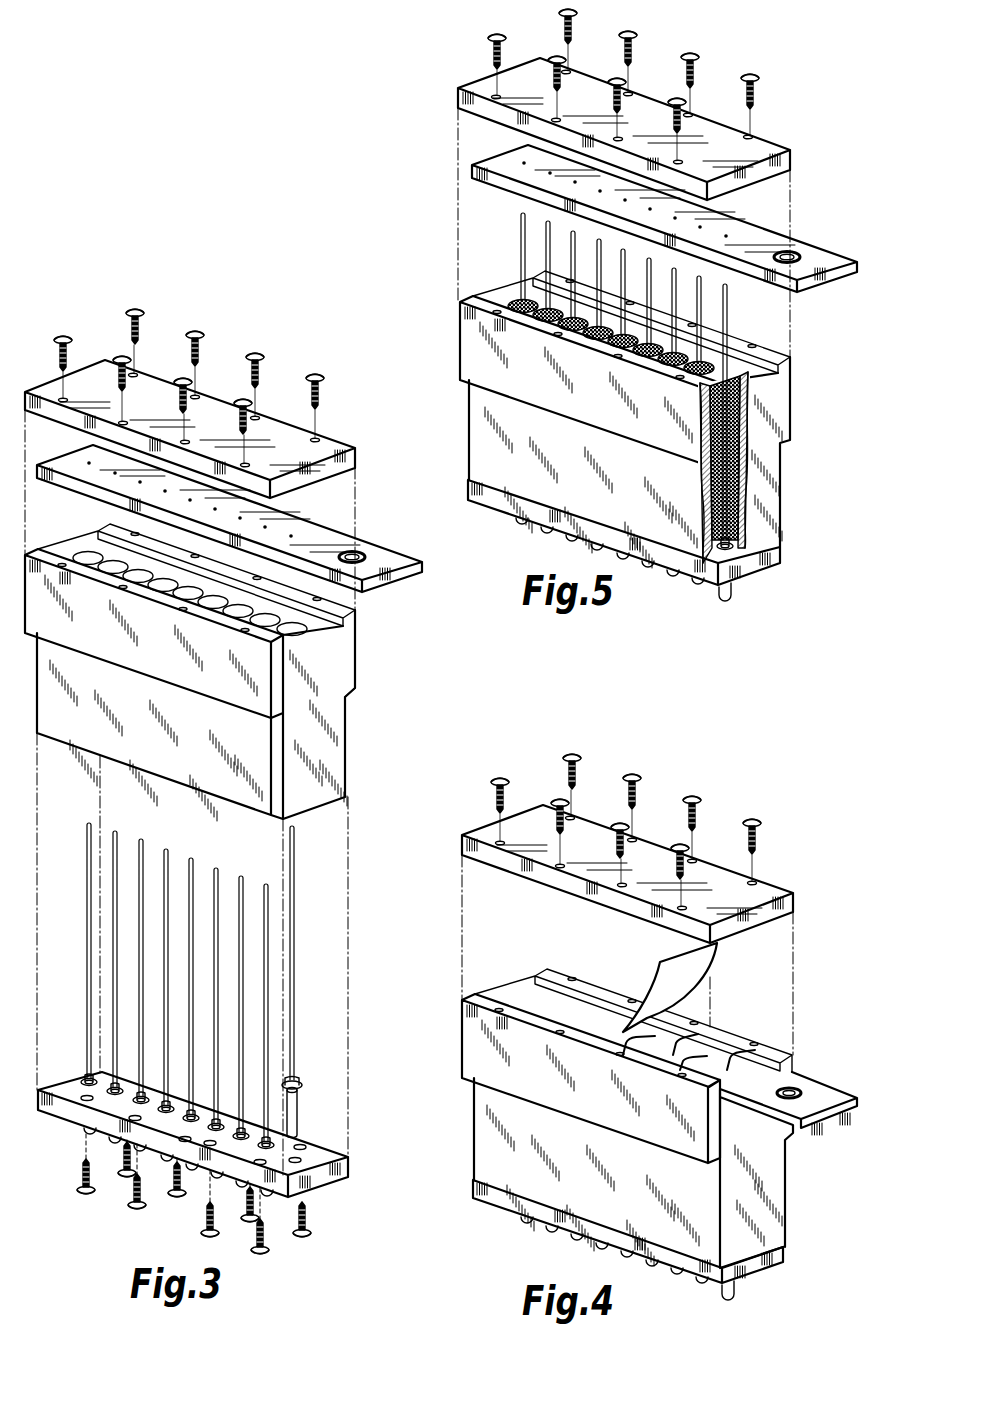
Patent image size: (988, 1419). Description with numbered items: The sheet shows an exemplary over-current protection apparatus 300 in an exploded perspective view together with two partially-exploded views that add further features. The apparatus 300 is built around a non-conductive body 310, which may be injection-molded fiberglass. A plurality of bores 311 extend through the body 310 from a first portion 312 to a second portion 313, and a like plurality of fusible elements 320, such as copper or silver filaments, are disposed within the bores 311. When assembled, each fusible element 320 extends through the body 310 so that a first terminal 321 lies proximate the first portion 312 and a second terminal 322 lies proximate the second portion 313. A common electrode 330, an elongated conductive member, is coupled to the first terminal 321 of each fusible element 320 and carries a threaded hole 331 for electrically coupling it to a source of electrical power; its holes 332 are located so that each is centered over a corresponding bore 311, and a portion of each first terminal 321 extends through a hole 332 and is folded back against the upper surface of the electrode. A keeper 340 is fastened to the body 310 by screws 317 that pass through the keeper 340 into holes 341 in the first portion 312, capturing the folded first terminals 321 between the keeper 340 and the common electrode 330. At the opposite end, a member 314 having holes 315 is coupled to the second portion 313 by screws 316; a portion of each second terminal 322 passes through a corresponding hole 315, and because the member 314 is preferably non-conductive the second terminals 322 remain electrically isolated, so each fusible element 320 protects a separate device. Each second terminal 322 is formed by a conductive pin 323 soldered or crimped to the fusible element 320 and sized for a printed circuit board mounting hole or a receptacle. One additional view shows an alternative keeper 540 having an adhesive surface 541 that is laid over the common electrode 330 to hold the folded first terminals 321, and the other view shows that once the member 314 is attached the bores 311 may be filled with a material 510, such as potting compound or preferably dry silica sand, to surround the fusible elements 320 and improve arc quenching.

In FIG. 3, the over-current protection apparatus 300 is at (265, 335).
In FIG. 3, the non-conductive body 310 is at (241, 691).
In FIG. 5, the non-conductive body 310 is at (661, 419).
In FIG. 4, the non-conductive body 310 is at (665, 1118).
In FIG. 3, the bores 311 is at (344, 633).
In FIG. 3, the first portion 312 is at (101, 552).
In FIG. 3, the second portion 313 is at (321, 816).
In FIG. 3, the member 314 is at (242, 1151).
In FIG. 5, the member 314 is at (784, 557).
In FIG. 4, the member 314 is at (786, 1257).
In FIG. 3, the holes 315 is at (313, 1157).
In FIG. 3, the screws 316 is at (268, 1249).
In FIG. 3, the screws 317 is at (315, 376).
In FIG. 5, the screws 317 is at (752, 76).
In FIG. 4, the screws 317 is at (752, 826).
In FIG. 3, the fusible elements 320 is at (248, 980).
In FIG. 5, the fusible elements 320 is at (729, 491).
In FIG. 3, the first terminal 321 is at (283, 852).
In FIG. 4, the first terminal 321 is at (727, 1065).
In FIG. 3, the second terminal 322 is at (313, 1093).
In FIG. 3, the conductive pin 323 is at (358, 982).
In FIG. 5, the conductive pin 323 is at (725, 600).
In FIG. 4, the conductive pin 323 is at (723, 1293).
In FIG. 3, the common electrode 330 is at (262, 518).
In FIG. 5, the common electrode 330 is at (820, 258).
In FIG. 4, the common electrode 330 is at (749, 1055).
In FIG. 3, the threaded hole 331 is at (354, 555).
In FIG. 3, the holes 332 is at (291, 532).
In FIG. 3, the keeper 340 is at (338, 442).
In FIG. 5, the keeper 340 is at (766, 138).
In FIG. 4, the keeper 340 is at (769, 885).
In FIG. 3, the holes 341 is at (322, 599).
In FIG. 4, the holes 341 is at (753, 1047).
In FIG. 5, the material 510 is at (742, 441).
In FIG. 4, the keeper 540 is at (661, 971).
In FIG. 4, the adhesive surface 541 is at (700, 963).